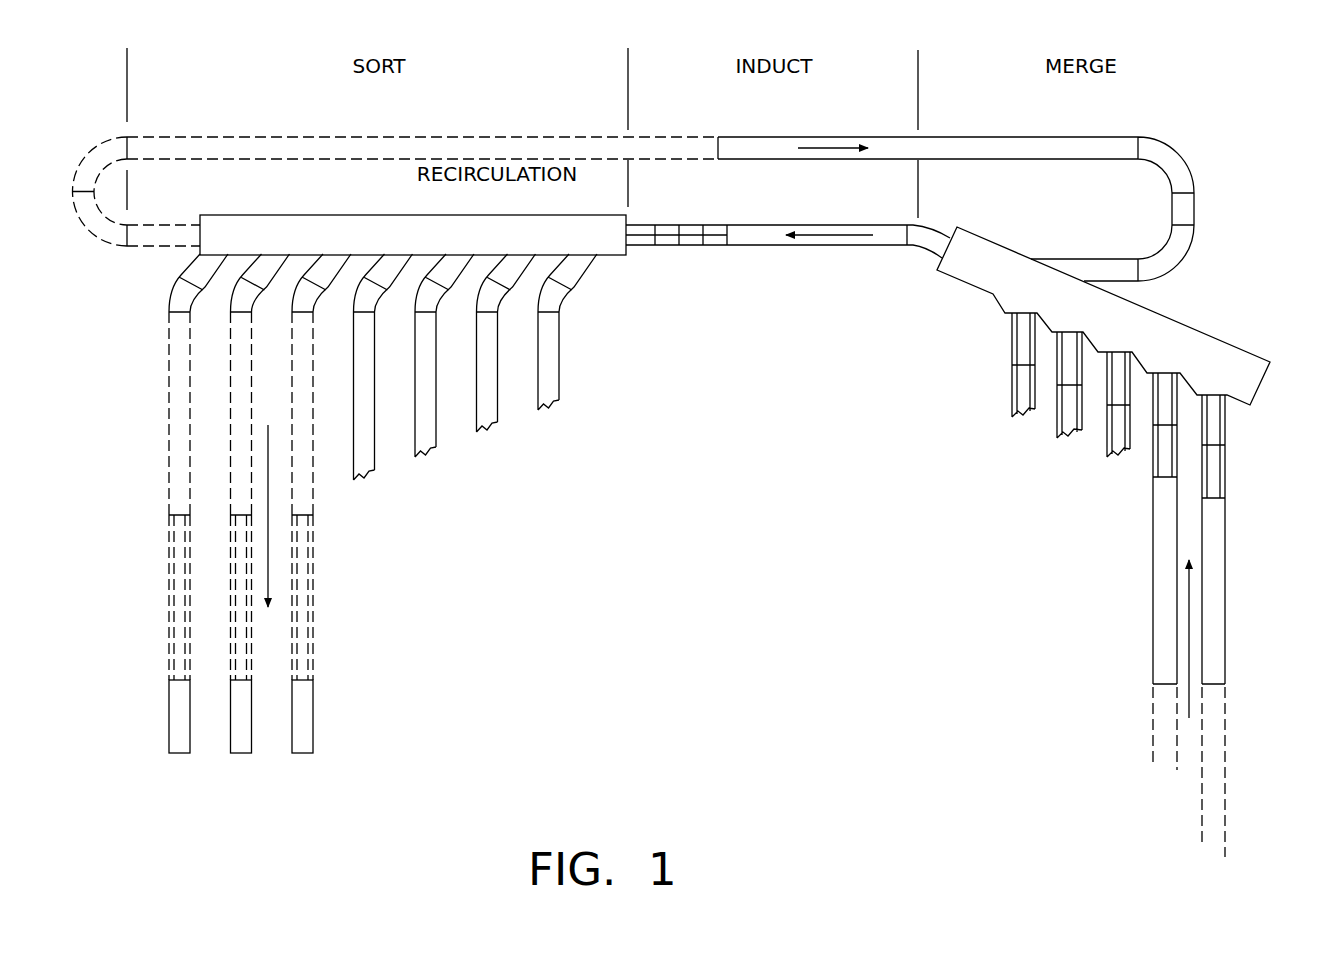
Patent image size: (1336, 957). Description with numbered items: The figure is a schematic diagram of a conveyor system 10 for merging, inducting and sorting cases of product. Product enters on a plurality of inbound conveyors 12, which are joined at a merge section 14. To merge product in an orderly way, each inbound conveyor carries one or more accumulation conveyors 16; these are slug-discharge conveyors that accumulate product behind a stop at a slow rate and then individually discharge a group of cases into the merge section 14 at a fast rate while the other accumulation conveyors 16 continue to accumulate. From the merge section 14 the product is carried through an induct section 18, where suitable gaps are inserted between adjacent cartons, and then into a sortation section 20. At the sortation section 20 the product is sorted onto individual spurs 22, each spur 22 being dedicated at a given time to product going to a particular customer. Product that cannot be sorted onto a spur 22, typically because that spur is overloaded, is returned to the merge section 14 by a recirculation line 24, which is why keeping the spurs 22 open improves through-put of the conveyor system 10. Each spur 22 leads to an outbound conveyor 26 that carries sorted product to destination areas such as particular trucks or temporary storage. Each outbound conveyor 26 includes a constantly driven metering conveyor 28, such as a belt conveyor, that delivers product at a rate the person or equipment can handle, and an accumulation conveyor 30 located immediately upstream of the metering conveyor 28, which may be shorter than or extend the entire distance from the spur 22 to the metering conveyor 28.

The conveyor system 10 is at (708, 517).
The inbound conveyors 12 is at (1145, 726).
The merge section 14 is at (1187, 317).
The accumulation conveyors 16 is at (1152, 613).
The induct section 18 is at (806, 256).
The sortation section 20 is at (305, 211).
The spurs 22 is at (172, 293).
The recirculation line 24 is at (657, 137).
The outbound conveyors 26 is at (159, 405).
The metering conveyor 28 is at (165, 735).
The accumulation conveyor 30 is at (167, 642).